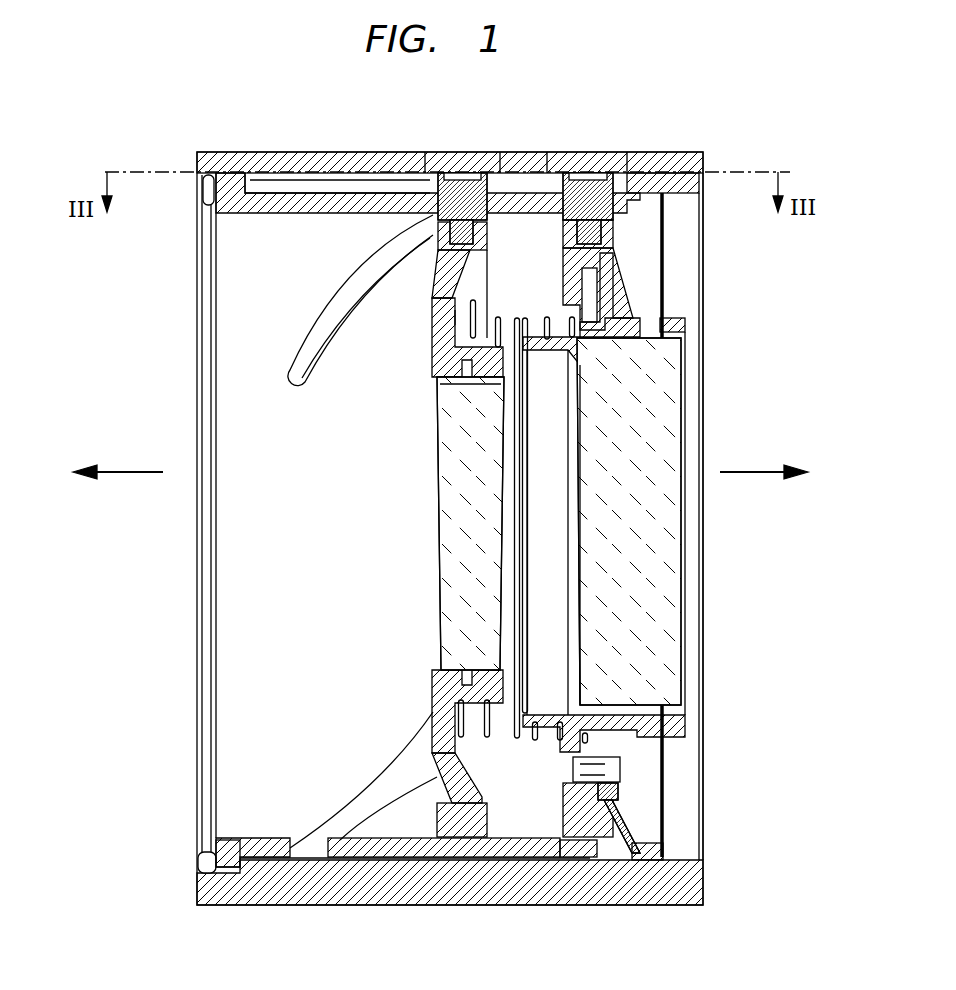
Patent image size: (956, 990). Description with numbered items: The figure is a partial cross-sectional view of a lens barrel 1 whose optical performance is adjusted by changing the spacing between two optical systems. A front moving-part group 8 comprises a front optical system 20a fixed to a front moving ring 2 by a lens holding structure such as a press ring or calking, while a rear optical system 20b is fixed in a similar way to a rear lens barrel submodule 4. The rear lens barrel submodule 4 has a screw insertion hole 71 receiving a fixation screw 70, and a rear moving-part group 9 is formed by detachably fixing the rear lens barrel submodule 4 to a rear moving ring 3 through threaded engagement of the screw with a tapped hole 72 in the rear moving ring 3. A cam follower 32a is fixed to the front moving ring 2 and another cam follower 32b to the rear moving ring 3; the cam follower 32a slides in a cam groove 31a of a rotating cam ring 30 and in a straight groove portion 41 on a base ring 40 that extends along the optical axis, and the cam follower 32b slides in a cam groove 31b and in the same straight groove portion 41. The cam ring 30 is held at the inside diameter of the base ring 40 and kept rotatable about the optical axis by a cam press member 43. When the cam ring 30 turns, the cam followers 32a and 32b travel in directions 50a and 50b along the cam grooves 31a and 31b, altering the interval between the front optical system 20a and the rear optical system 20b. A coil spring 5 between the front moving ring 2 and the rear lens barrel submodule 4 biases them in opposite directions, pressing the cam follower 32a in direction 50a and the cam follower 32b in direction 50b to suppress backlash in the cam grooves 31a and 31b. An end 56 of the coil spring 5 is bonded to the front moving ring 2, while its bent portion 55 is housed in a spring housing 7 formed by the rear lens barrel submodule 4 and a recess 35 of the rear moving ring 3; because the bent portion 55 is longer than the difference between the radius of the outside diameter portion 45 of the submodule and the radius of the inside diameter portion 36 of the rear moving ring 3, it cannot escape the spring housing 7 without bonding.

The lens barrel 1 is at (100, 152).
The front moving ring 2 is at (430, 717).
The rear moving ring 3 is at (580, 857).
The rear lens barrel submodule 4 is at (650, 727).
The coil spring 5 is at (508, 740).
The spring housing 7 is at (632, 285).
The front moving-part group 8 is at (428, 278).
The rear moving-part group 9 is at (700, 333).
The front optical system 20a is at (448, 524).
The rear optical system 20b is at (668, 560).
The cam ring 30 is at (232, 207).
The cam groove 31a is at (298, 848).
The cam groove 31b is at (636, 860).
The cam follower 32a is at (455, 178).
The cam follower 32b is at (590, 178).
The recess 35 is at (610, 240).
The inside diameter portion 36 is at (558, 318).
The base ring 40 is at (215, 160).
The straight groove portion 41 is at (300, 185).
The cam press member 43 is at (197, 196).
The outside diameter portion 45 is at (550, 312).
The direction of the optical axis 50a is at (128, 468).
The direction of the optical axis 50b is at (757, 470).
The bent portion 55 is at (604, 300).
The end 56 is at (446, 318).
The fixation screw 70 is at (603, 770).
The screw insertion hole 71 is at (618, 803).
The tapped hole 72 is at (590, 815).